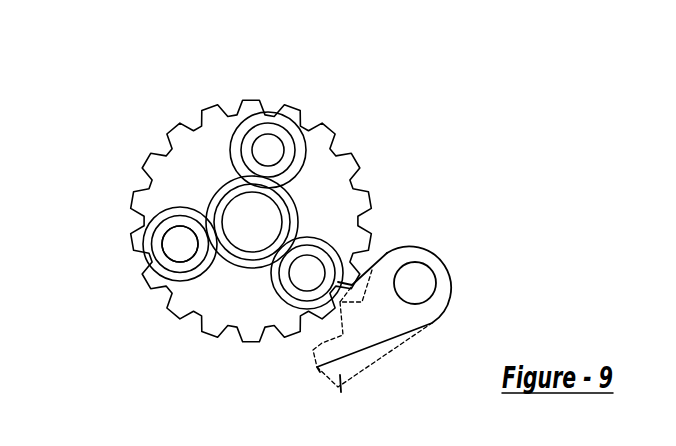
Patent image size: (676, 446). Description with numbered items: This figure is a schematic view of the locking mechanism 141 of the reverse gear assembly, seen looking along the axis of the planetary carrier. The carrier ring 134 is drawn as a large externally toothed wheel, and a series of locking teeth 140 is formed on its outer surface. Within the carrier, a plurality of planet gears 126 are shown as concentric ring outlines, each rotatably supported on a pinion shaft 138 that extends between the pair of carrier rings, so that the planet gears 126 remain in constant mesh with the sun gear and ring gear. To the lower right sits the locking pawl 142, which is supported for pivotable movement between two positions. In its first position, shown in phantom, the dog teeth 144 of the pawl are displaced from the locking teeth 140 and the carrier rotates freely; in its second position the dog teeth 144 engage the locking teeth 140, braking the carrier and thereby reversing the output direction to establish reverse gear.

The planet gears 126 is at (147, 258).
The carrier ring 134 is at (199, 143).
The pinion shafts 138 is at (162, 215).
The locking teeth 140 is at (327, 128).
The locking mechanism 141 is at (273, 94).
The locking pawl 142 is at (435, 248).
The dog teeth 144 is at (308, 333).